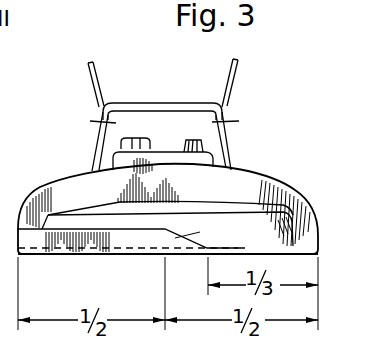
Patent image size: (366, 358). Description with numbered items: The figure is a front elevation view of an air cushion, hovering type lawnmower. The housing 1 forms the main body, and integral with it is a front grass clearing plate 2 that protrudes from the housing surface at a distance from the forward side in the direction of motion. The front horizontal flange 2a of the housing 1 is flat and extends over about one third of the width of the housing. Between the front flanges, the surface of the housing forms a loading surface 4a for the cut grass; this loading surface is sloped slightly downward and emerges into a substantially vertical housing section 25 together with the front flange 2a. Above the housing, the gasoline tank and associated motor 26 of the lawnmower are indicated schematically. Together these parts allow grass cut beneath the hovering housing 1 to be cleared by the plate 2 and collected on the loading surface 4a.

The housing 1 is at (61, 206).
The front grass clearing plate 2 is at (246, 180).
The front horizontal flange 2a is at (151, 256).
The loading surface 4a is at (92, 213).
The vertical housing section 25 is at (272, 230).
The gasoline tank and associated motor 26 is at (157, 153).